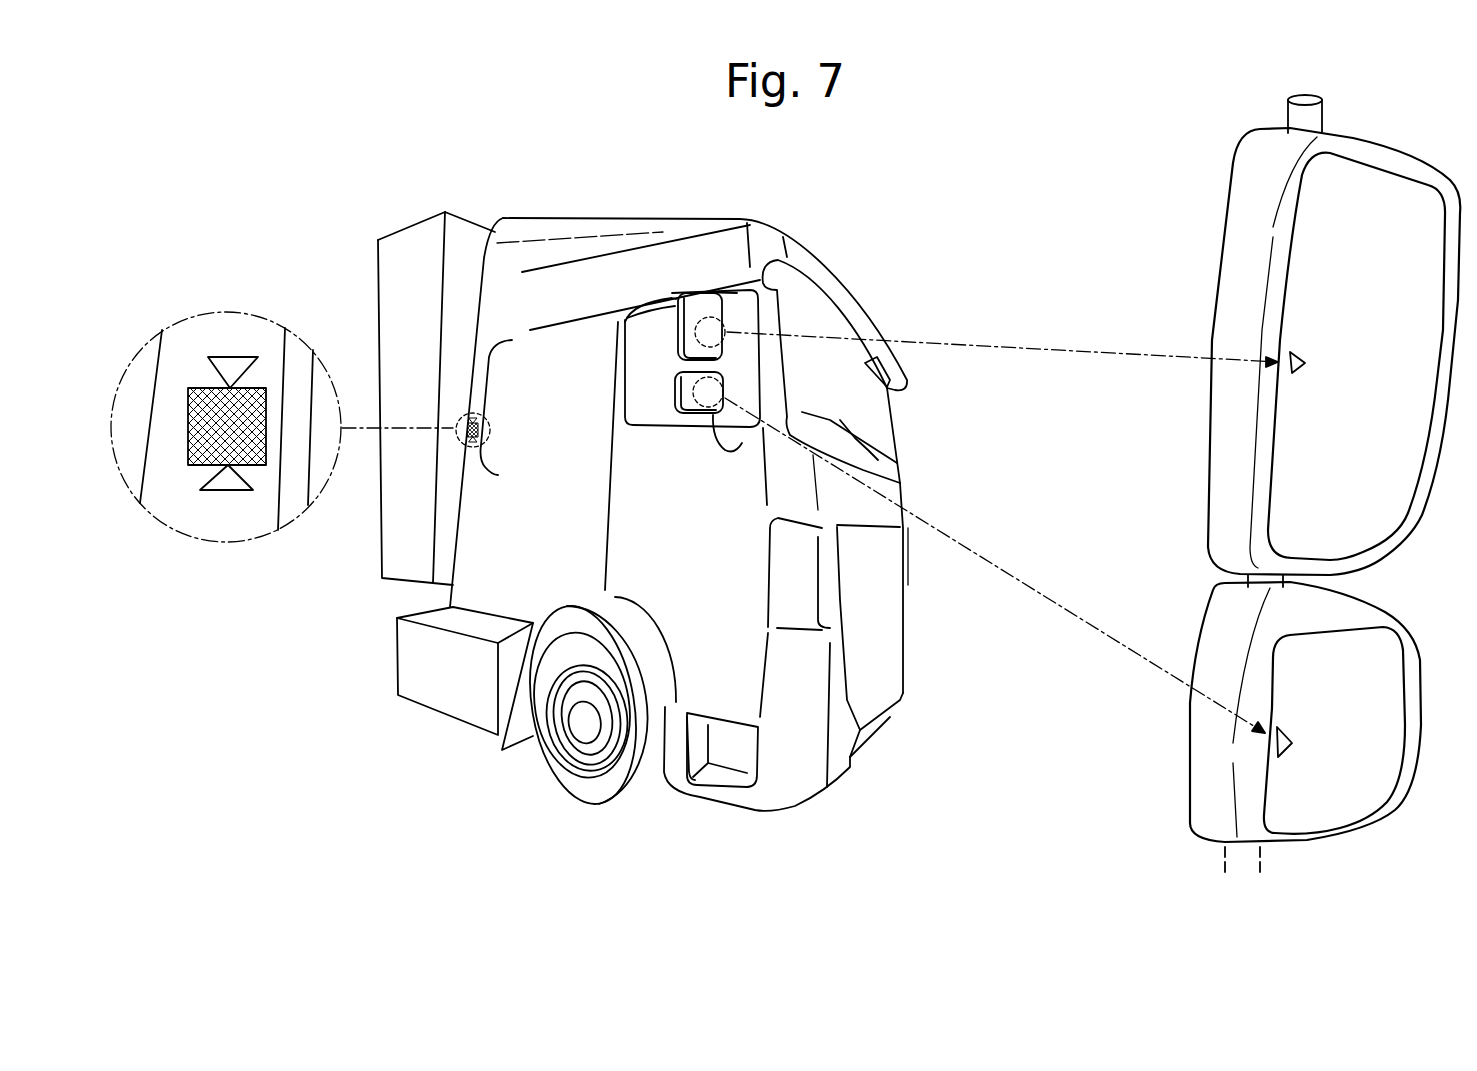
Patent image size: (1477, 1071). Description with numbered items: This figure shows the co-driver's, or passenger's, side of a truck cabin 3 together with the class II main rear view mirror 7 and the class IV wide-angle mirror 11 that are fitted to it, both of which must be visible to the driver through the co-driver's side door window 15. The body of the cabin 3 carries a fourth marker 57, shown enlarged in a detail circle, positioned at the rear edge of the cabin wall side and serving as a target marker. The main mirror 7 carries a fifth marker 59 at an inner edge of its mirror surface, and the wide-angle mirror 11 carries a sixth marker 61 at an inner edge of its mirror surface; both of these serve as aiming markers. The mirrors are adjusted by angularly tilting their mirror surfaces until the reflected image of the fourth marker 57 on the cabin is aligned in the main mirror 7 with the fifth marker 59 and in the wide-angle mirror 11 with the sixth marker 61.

The cabin 3 is at (740, 576).
The main rear view mirror 7 is at (702, 305).
The wide-angle mirror 11 is at (692, 407).
The co-driver's side door window 15 is at (642, 377).
The fourth marker 57 is at (210, 417).
The fifth marker 59 is at (1300, 370).
The sixth marker 61 is at (1290, 753).